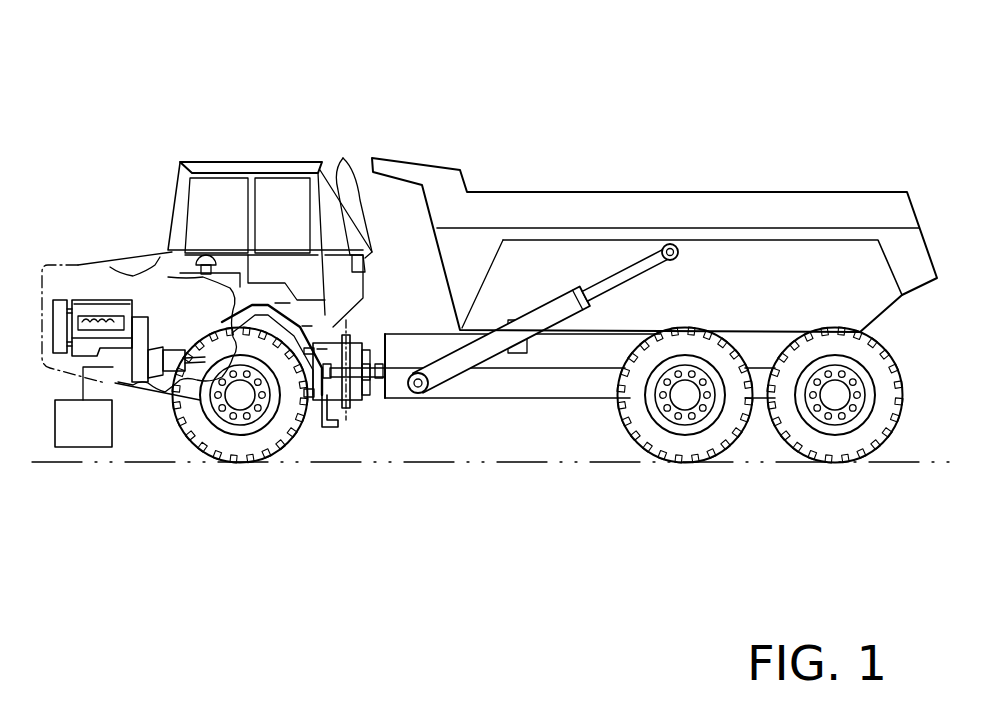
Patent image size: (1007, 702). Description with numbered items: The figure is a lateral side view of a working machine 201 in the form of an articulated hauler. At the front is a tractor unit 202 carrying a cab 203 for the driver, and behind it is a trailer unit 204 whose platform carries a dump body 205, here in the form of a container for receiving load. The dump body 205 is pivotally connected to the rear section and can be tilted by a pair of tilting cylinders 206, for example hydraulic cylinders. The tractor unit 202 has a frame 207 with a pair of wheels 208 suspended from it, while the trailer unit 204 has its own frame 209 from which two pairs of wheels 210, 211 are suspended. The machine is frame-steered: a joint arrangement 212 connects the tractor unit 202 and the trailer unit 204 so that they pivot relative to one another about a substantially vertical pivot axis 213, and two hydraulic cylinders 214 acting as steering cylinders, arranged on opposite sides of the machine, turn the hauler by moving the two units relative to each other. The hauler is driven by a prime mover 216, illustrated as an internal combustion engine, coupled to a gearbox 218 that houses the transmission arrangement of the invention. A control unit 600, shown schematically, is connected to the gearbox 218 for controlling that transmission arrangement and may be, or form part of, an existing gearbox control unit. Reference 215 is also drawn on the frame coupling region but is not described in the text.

The working machine 201 is at (630, 72).
The tractor unit 202 is at (229, 137).
The cab 203 is at (272, 163).
The trailer unit 204 is at (757, 157).
The dump body 205 is at (614, 216).
The tilting cylinders 206 is at (478, 386).
The frame 207 is at (142, 388).
The wheels 208 is at (253, 442).
The frame 209 is at (478, 352).
The wheels 210 is at (682, 443).
The wheels 211 is at (833, 443).
The joint arrangement 212 is at (384, 403).
The pivot axis 213 is at (360, 425).
The hydraulic cylinders 214 is at (403, 402).
The frame coupling 215 is at (383, 340).
The prime mover 216 is at (97, 312).
The gearbox 218 is at (172, 360).
The control unit 600 is at (80, 447).